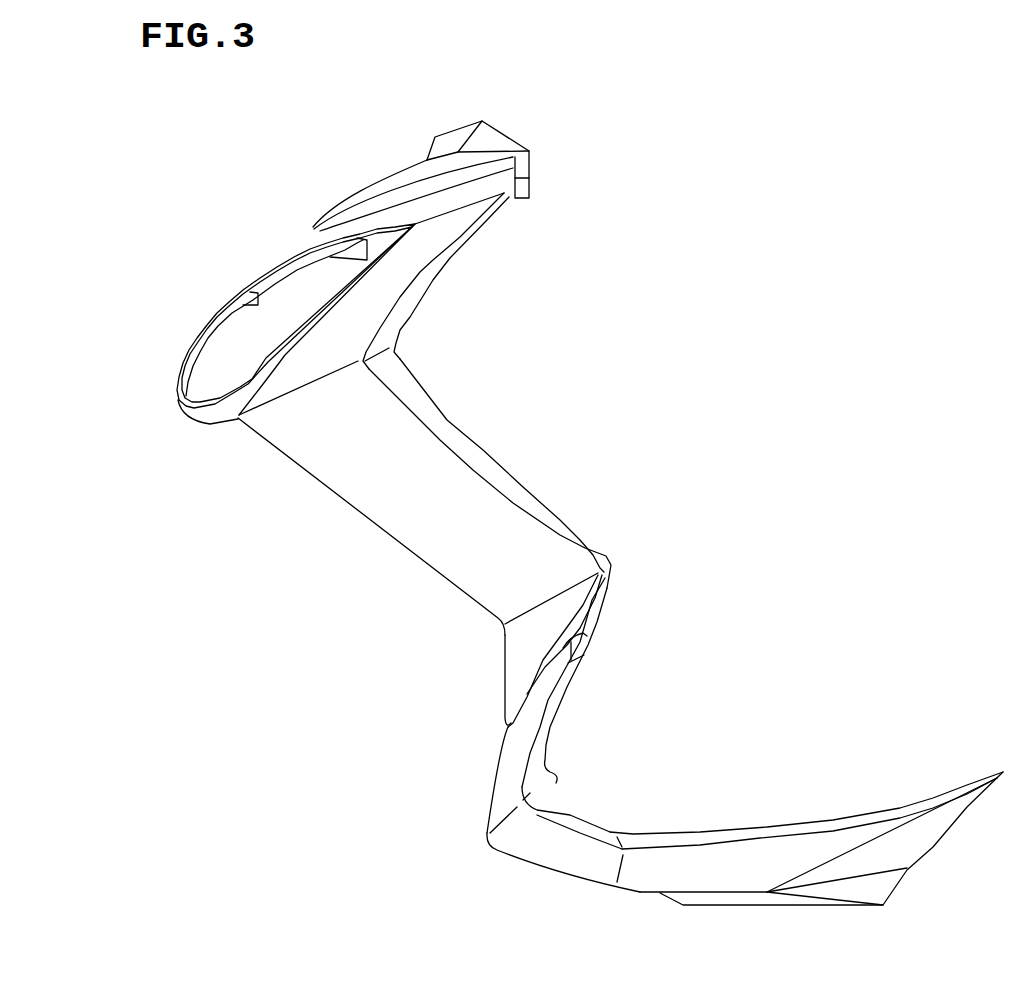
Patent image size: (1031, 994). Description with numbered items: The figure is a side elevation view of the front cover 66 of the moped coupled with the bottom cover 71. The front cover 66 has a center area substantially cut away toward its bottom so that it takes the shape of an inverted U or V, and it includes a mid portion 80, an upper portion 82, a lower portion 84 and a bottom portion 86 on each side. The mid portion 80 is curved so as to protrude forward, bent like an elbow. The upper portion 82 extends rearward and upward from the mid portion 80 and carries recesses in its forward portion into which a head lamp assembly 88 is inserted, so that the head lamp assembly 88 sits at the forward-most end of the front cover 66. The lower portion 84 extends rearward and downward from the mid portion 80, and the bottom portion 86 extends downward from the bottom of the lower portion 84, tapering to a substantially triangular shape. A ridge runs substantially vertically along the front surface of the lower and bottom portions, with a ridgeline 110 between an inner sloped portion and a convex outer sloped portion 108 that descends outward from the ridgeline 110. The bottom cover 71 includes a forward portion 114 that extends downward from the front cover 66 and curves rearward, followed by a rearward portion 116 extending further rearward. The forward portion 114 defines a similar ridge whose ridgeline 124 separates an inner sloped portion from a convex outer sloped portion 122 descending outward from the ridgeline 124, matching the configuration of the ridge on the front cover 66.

The front cover 66 is at (298, 545).
The bottom cover 71 is at (803, 781).
The mid portion 80 is at (223, 438).
The upper portion 82 is at (467, 276).
The lower portion 84 is at (541, 480).
The bottom portion 86 is at (468, 668).
The head lamp assembly 88 is at (230, 345).
The outer sloped portion 108 is at (510, 687).
The ridgeline 110 is at (502, 650).
The forward portion 114 is at (462, 782).
The rearward portion 116 is at (716, 817).
The outer sloped portion 122 is at (498, 797).
The ridgeline 124 is at (497, 770).